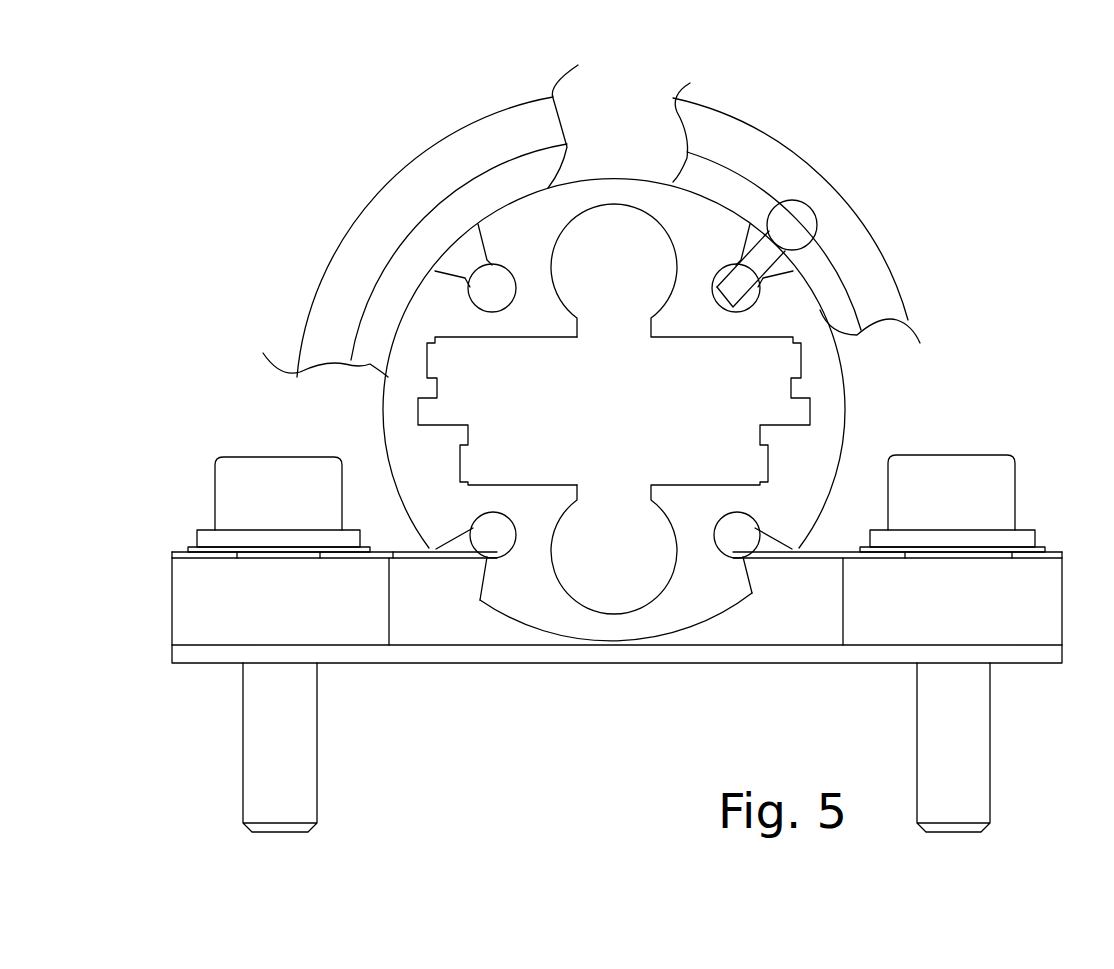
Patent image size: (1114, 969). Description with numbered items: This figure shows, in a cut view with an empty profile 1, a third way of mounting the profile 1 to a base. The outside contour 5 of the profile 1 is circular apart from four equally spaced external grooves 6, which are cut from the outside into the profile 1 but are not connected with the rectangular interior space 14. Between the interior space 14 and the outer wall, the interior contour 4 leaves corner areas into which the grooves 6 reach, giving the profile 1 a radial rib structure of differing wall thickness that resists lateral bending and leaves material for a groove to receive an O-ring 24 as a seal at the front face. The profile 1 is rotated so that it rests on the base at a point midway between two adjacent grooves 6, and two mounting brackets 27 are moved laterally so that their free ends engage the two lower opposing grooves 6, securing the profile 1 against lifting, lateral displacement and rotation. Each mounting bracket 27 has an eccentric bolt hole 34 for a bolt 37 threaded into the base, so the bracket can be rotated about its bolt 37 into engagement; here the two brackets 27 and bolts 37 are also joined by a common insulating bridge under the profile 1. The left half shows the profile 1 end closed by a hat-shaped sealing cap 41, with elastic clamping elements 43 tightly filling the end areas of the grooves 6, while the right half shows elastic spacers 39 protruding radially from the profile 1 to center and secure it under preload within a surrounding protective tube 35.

The profile 1 is at (748, 267).
The interior contour 4 is at (472, 338).
The outside contour 5 is at (845, 397).
The external grooves 6 is at (485, 532).
The interior space 14 is at (680, 409).
The O-ring 24 is at (482, 197).
The mounting brackets 27 is at (400, 562).
The bolt hole 34 is at (247, 555).
The protective tube 35 is at (833, 210).
The bolts 37 is at (616, 643).
The elastic spacers 39 is at (785, 238).
The sealing cap 41 is at (375, 215).
The clamping elements 43 is at (490, 283).